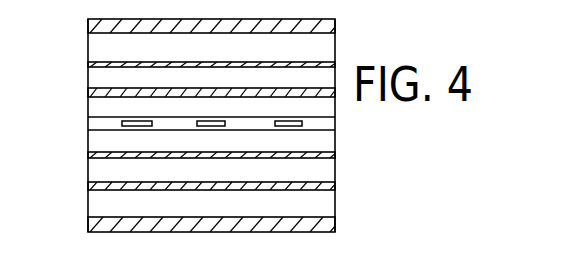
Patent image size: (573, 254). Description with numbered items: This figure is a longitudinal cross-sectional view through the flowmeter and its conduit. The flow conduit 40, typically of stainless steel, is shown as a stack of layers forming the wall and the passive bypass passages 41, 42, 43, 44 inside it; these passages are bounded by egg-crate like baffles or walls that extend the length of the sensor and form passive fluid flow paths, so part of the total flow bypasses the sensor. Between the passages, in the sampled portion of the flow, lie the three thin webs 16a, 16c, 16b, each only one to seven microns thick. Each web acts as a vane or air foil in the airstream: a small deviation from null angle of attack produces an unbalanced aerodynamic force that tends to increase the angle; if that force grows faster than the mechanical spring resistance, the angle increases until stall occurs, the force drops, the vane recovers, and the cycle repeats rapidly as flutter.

The flow conduit 40 is at (88, 20).
The passive bypass passage 41 is at (92, 62).
The passive bypass passage 42 is at (92, 89).
The passive bypass passage 43 is at (92, 153).
The passive bypass passage 44 is at (92, 184).
The web 16a is at (132, 121).
The web 16c is at (205, 121).
The web 16b is at (293, 121).